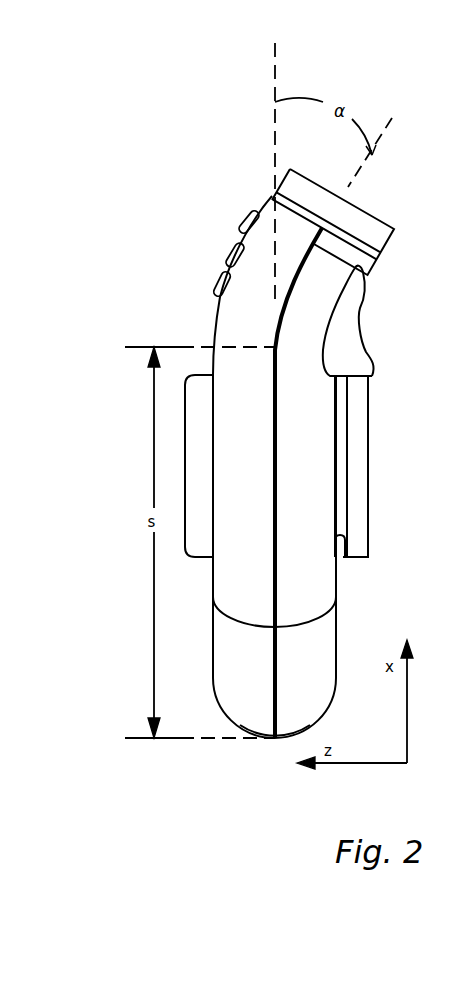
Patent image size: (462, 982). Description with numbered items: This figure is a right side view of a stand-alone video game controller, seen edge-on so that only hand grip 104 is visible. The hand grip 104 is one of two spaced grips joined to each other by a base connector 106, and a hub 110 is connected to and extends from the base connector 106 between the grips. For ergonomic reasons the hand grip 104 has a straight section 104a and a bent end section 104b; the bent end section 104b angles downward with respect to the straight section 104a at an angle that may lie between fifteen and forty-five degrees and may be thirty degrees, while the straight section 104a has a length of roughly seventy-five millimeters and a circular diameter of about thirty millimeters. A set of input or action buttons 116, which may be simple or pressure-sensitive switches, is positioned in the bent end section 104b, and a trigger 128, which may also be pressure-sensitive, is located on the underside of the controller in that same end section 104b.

The hand grip 104 is at (217, 333).
The straight section 104a is at (323, 575).
The bent end section 104b is at (264, 206).
The base connector 106 is at (297, 736).
The hub 110 is at (368, 466).
The input buttons 116 is at (235, 252).
The trigger 128 is at (348, 341).